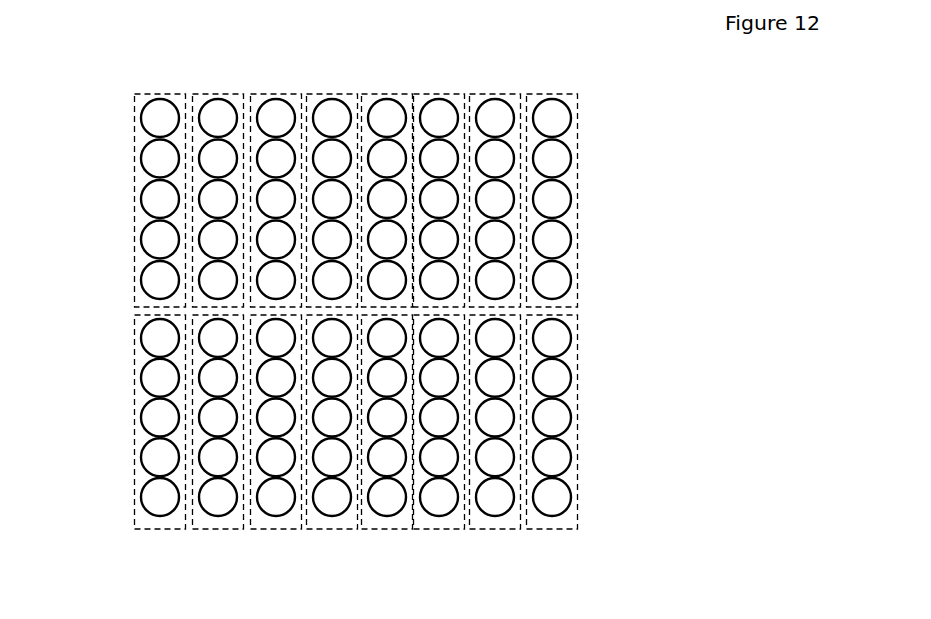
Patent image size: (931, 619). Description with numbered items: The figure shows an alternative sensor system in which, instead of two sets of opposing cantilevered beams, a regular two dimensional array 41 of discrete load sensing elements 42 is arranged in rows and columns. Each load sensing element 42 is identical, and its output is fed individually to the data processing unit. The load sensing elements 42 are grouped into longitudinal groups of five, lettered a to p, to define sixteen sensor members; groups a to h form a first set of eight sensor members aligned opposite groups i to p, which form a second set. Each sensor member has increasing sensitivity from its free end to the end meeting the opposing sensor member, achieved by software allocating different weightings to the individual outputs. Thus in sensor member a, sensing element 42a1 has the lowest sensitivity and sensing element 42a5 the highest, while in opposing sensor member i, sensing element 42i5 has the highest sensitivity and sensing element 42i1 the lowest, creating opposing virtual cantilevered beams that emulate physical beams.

The two dimensional array 41 is at (416, 315).
The load sensing element 42 is at (341, 307).
The sensing element a1 42a1 is at (165, 116).
The sensing element a5 42a5 is at (157, 282).
The sensing element i5 42i5 is at (160, 338).
The sensing element i1 42i1 is at (160, 494).